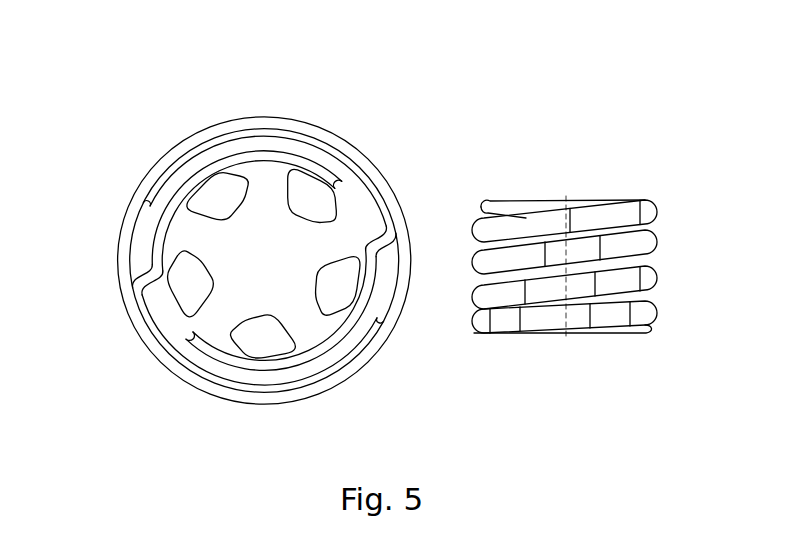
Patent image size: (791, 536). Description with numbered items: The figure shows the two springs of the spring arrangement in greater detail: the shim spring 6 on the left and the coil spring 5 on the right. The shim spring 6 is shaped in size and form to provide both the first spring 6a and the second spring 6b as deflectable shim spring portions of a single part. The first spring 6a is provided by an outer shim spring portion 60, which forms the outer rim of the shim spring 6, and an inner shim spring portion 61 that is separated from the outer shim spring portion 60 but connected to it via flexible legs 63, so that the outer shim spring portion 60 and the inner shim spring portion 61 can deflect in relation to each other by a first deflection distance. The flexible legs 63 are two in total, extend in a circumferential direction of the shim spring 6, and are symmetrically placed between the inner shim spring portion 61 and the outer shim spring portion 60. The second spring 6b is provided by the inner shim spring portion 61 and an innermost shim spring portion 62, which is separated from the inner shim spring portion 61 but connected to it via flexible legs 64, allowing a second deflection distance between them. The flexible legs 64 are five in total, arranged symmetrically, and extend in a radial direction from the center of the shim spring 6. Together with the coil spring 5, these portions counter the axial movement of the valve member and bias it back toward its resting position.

The coil spring 5 is at (505, 180).
The shim spring 6 is at (239, 98).
The first spring 6a is at (222, 142).
The second spring 6b is at (188, 233).
The outer shim spring portion 60 is at (280, 112).
The inner shim spring portion 61 is at (347, 140).
The innermost shim spring portion 62 is at (254, 262).
The flexible legs 63 is at (357, 340).
The flexible legs 64 is at (230, 333).